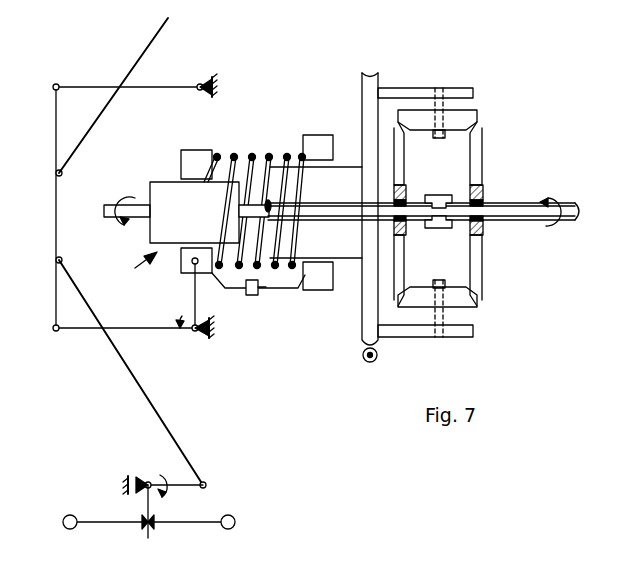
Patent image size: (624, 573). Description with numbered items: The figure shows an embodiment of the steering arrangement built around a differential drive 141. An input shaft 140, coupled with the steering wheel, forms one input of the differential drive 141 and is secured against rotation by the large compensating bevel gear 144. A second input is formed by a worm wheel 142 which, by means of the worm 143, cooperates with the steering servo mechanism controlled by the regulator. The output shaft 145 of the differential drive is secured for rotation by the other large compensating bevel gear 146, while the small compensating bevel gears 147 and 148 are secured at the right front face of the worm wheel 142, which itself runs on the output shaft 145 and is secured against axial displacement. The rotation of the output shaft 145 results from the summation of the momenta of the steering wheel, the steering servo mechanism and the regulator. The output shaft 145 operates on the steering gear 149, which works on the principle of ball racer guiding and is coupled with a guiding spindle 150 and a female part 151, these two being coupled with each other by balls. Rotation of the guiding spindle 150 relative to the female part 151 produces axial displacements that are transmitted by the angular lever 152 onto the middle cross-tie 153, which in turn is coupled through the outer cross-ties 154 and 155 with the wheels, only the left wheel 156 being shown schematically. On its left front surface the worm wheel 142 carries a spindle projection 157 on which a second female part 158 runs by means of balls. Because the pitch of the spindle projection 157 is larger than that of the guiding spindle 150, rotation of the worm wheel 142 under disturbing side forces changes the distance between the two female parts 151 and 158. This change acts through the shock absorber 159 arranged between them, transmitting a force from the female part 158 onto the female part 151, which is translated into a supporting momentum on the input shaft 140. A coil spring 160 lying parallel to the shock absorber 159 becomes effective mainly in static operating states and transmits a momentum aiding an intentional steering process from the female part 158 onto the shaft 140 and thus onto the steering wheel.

The input shaft 140 is at (530, 214).
The differential drive 141 is at (494, 108).
The worm wheel 142 is at (368, 98).
The worm 143 is at (377, 358).
The large compensating bevel gear 144 is at (480, 163).
The output shaft 145 is at (348, 260).
The large compensating bevel gear 146 is at (398, 147).
The small compensating bevel gear 147 is at (462, 118).
The small compensating bevel gear 148 is at (463, 297).
The steering gear 149 is at (126, 267).
The guiding spindle 150 is at (160, 188).
The female part 151 is at (192, 162).
The angular lever 152 is at (192, 286).
The middle cross-tie 153 is at (55, 204).
The outer cross-tie 154 is at (152, 393).
The outer cross-tie 155 is at (140, 58).
The left wheel 156 is at (103, 526).
The spindle projection 157 is at (305, 240).
The female part 158 is at (316, 148).
The shock absorber 159 is at (249, 298).
The coil spring 160 is at (250, 156).